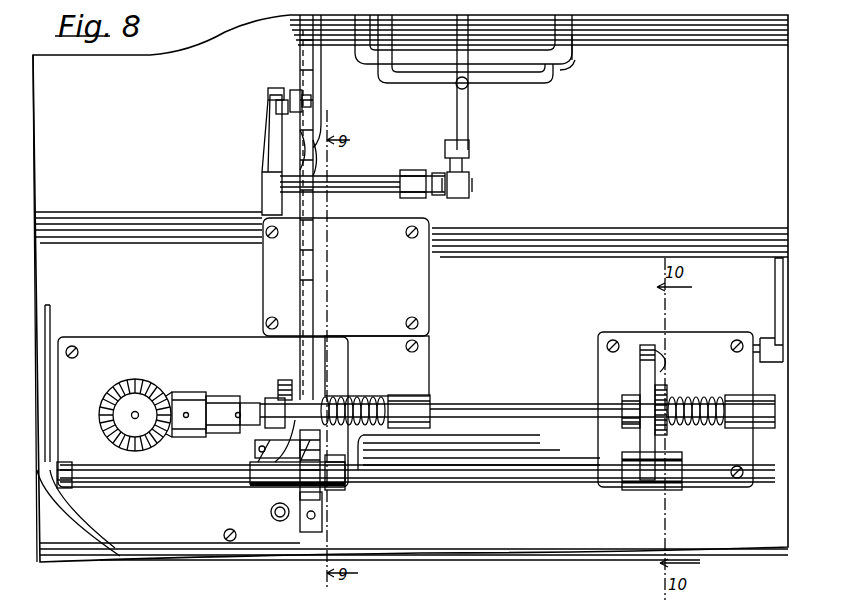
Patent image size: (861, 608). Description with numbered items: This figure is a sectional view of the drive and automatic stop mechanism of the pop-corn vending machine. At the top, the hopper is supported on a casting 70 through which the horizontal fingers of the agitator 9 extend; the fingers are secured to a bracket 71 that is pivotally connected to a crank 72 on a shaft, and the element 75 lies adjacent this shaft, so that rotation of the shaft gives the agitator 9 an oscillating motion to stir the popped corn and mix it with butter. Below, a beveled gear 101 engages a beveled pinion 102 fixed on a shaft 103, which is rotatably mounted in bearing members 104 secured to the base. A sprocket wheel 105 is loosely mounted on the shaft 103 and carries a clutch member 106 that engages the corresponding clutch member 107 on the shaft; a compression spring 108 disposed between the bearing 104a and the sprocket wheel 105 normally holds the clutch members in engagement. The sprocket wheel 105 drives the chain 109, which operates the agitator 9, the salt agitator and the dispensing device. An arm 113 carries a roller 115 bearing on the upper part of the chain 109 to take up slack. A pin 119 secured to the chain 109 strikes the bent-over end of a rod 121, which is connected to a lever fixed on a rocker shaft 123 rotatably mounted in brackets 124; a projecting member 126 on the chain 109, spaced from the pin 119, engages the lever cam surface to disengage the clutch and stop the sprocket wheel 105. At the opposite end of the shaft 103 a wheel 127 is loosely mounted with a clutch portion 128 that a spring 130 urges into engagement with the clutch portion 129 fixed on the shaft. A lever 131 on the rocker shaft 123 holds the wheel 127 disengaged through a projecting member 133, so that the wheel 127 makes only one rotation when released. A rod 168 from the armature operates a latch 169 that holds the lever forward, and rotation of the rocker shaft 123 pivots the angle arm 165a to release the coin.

The agitator 9 is at (462, 33).
The casting 70 is at (575, 44).
The bracket 71 is at (469, 106).
The crank 72 is at (470, 163).
The shaft 75 is at (366, 185).
The beveled gear 101 is at (128, 385).
The beveled pinion 102 is at (163, 392).
The shaft 103 is at (478, 402).
The bearing members 104 is at (738, 395).
The bearing 104a is at (412, 395).
The sprocket wheel 105 is at (270, 490).
The clutch member 106 is at (282, 380).
The clutch member 107 is at (268, 402).
The compression spring 108 is at (355, 396).
The chain 109 is at (300, 46).
The arm 113 is at (268, 133).
The roller 115 is at (295, 85).
The pin 119 is at (330, 182).
The rod 121 is at (318, 232).
The rocker shaft 123 is at (412, 480).
The brackets 124 is at (74, 488).
The projecting member 126 is at (255, 446).
The wheel 127 is at (668, 380).
The clutch portion 128 is at (657, 440).
The clutch portion 129 is at (622, 428).
The spring 130 is at (697, 430).
The lever 131 is at (640, 369).
The projecting member 133 is at (665, 350).
The angle arm 165a is at (85, 505).
The rod 168 is at (258, 480).
The latch 169 is at (245, 487).